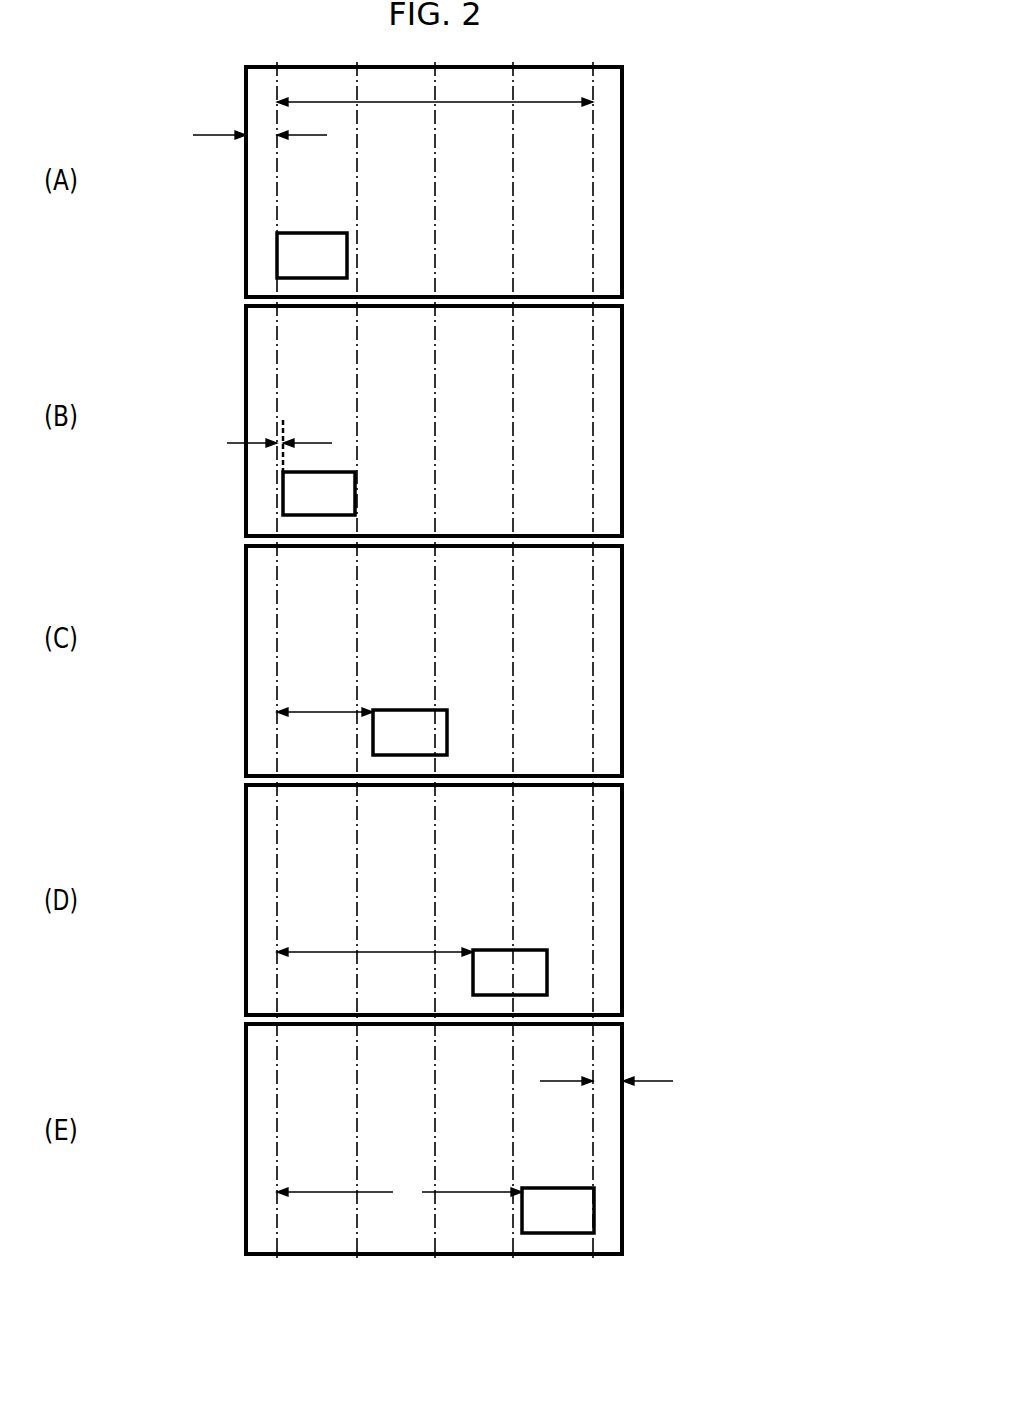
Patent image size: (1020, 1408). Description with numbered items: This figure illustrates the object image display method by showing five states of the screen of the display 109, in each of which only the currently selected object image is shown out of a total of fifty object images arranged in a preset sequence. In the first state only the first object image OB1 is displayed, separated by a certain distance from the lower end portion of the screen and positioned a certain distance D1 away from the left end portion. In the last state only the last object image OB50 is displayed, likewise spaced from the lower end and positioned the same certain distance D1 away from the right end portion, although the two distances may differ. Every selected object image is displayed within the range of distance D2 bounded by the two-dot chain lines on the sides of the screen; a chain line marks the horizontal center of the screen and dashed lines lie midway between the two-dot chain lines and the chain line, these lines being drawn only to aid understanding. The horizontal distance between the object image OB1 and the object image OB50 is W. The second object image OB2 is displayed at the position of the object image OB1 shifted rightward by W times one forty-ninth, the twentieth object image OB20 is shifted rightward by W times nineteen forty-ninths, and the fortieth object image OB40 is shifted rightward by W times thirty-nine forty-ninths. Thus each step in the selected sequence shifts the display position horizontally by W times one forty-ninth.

The display 109 is at (623, 131).
The first object image OB1 is at (312, 233).
The second object image OB2 is at (343, 472).
The twentieth object image OB20 is at (388, 710).
The fortieth object image OB40 is at (527, 950).
The last object image OB50 is at (545, 1188).
The certain distance D1 is at (266, 126).
The distance D2 is at (435, 88).
The distance W is at (283, 441).